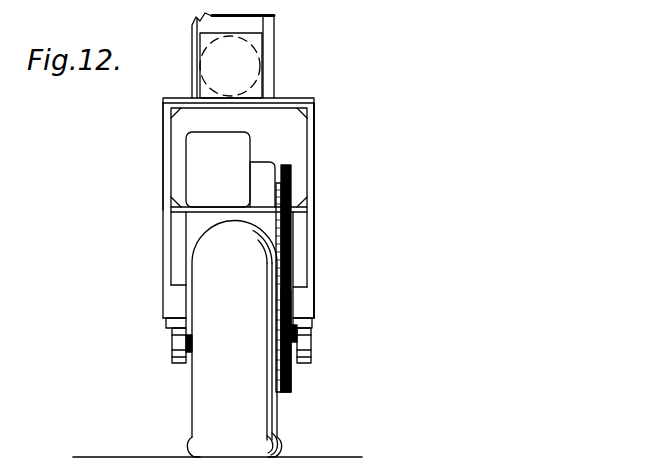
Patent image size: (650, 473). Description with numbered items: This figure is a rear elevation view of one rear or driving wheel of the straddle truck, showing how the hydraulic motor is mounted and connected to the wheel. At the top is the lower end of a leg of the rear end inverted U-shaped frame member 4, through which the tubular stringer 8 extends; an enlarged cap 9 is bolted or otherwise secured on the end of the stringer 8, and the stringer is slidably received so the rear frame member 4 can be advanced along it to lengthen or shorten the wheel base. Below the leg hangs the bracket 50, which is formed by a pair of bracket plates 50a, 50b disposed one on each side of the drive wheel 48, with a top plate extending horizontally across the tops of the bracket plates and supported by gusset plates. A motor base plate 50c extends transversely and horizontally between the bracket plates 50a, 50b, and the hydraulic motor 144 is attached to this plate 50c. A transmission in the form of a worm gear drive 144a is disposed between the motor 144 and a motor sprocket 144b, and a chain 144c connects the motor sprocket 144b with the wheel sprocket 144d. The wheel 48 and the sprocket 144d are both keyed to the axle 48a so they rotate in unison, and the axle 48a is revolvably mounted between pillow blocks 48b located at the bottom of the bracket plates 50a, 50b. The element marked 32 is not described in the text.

The rear end inverted U-shaped frame member 4 is at (283, 56).
The stringer 8 is at (200, 52).
The enlarged cap 9 is at (250, 69).
The upper bracket 32 is at (271, 42).
The drive wheel 48 is at (262, 437).
The axle 48a is at (177, 342).
The pillow block 48b is at (318, 383).
The bracket 50 is at (337, 186).
The bracket plate 50a is at (305, 113).
The bracket plate 50b is at (163, 143).
The motor base plate 50c is at (197, 208).
The hydraulic motor 144 is at (198, 153).
The worm gear drive 144a is at (266, 176).
The motor sprocket 144b is at (290, 167).
The chain 144c is at (283, 238).
The sprocket 144d is at (283, 293).